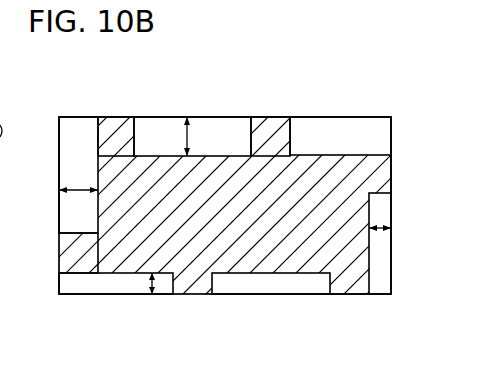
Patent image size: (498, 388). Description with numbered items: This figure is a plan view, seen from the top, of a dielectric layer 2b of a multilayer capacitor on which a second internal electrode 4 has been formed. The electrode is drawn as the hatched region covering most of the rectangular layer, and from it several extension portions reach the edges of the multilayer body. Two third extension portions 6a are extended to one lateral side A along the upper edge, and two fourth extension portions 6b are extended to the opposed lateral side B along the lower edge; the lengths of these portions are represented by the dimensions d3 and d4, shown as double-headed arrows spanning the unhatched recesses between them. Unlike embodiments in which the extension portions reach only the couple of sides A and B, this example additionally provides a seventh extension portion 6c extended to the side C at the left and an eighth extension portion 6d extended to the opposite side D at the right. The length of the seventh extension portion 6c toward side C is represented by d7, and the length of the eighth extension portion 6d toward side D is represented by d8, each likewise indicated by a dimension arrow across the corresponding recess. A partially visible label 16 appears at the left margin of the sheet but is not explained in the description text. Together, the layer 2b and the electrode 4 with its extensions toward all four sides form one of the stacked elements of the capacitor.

The second internal electrode 4 is at (130, 262).
The third extension portions 6a is at (110, 125).
The fourth extension portions 6b is at (197, 288).
The seventh extension portion 6c is at (82, 265).
The eighth extension portion 6d is at (378, 165).
The dielectric layer 2b is at (392, 250).
The left side portion 16 is at (10, 234).
The lateral side A is at (300, 118).
The lateral side B is at (360, 295).
The side C is at (59, 152).
The side D is at (392, 168).
The length of third extension portions d3 is at (184, 133).
The length of fourth extension portions d4 is at (155, 283).
The length of seventh extension portion d7 is at (72, 193).
The length of eighth extension portion d8 is at (393, 224).